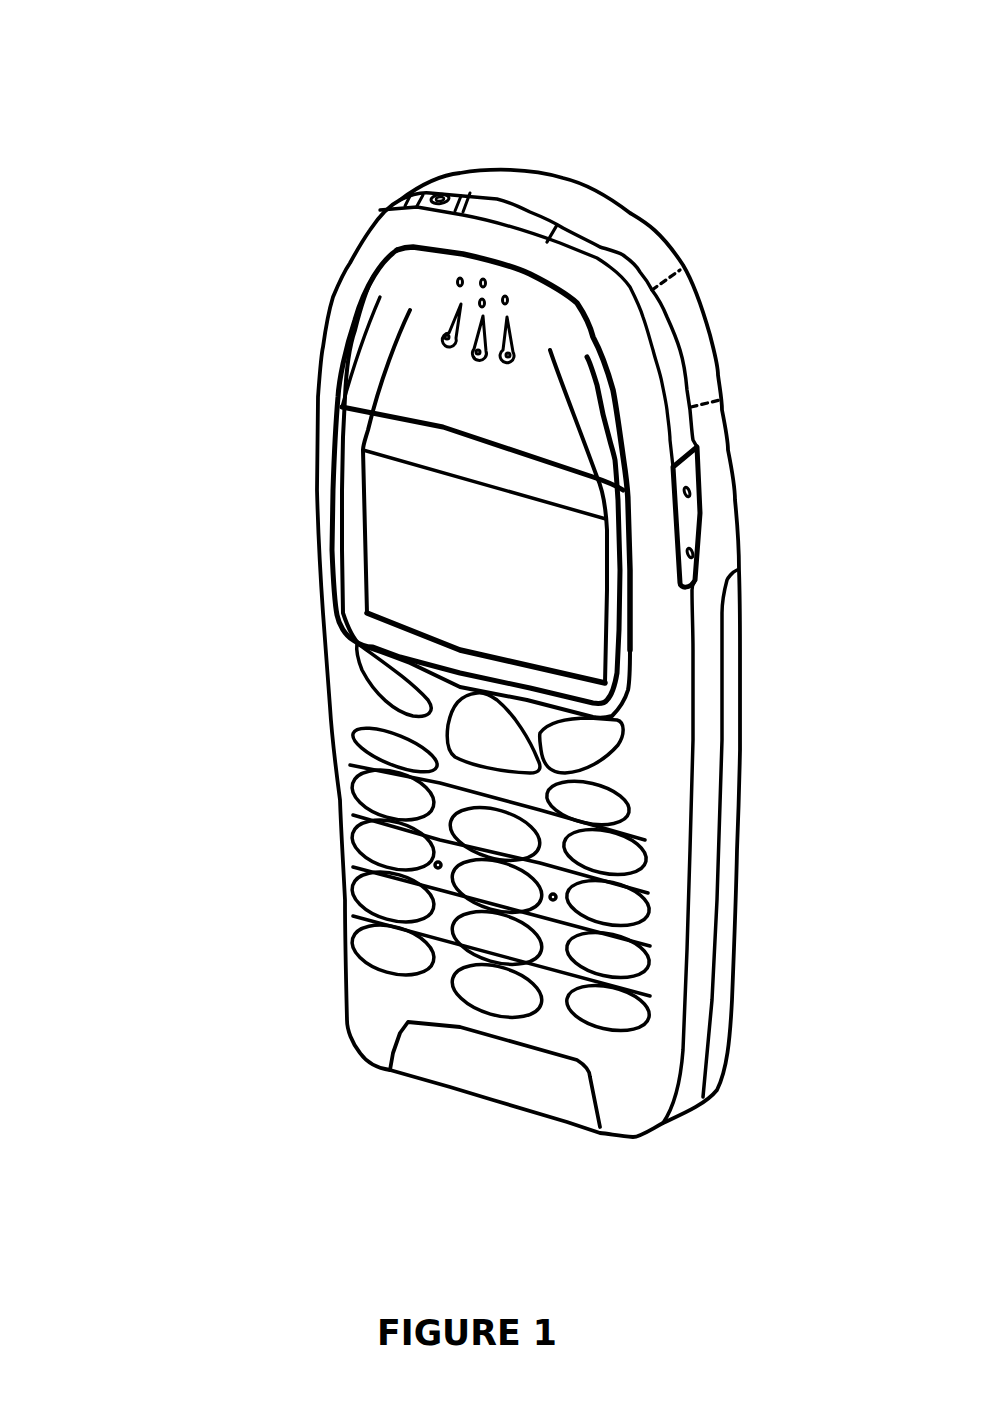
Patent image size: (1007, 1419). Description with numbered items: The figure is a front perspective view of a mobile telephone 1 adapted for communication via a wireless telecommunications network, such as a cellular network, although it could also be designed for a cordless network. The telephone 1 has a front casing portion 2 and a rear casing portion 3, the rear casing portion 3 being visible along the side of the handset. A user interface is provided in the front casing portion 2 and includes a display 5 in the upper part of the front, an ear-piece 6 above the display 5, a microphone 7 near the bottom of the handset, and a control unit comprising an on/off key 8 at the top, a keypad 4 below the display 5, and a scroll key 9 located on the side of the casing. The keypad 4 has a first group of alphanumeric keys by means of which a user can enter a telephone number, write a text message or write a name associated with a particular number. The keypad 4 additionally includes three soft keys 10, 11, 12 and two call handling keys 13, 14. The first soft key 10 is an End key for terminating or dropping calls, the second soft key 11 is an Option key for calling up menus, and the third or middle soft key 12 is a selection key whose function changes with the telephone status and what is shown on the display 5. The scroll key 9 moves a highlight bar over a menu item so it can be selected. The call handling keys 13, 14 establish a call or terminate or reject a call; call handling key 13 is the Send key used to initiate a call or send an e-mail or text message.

The mobile telephone 1 is at (152, 56).
The front casing portion 2 is at (672, 780).
The rear casing portion 3 is at (738, 697).
The keypad 4 is at (380, 887).
The display 5 is at (410, 543).
The ear-piece 6 is at (460, 300).
The microphone 7 is at (503, 1095).
The on/off key 8 is at (443, 195).
The scroll key 9 is at (695, 509).
The first soft key 10 is at (380, 682).
The second soft key 11 is at (593, 747).
The third soft key 12 is at (473, 728).
The call handling key 13 is at (400, 745).
The call handling key 14 is at (613, 805).